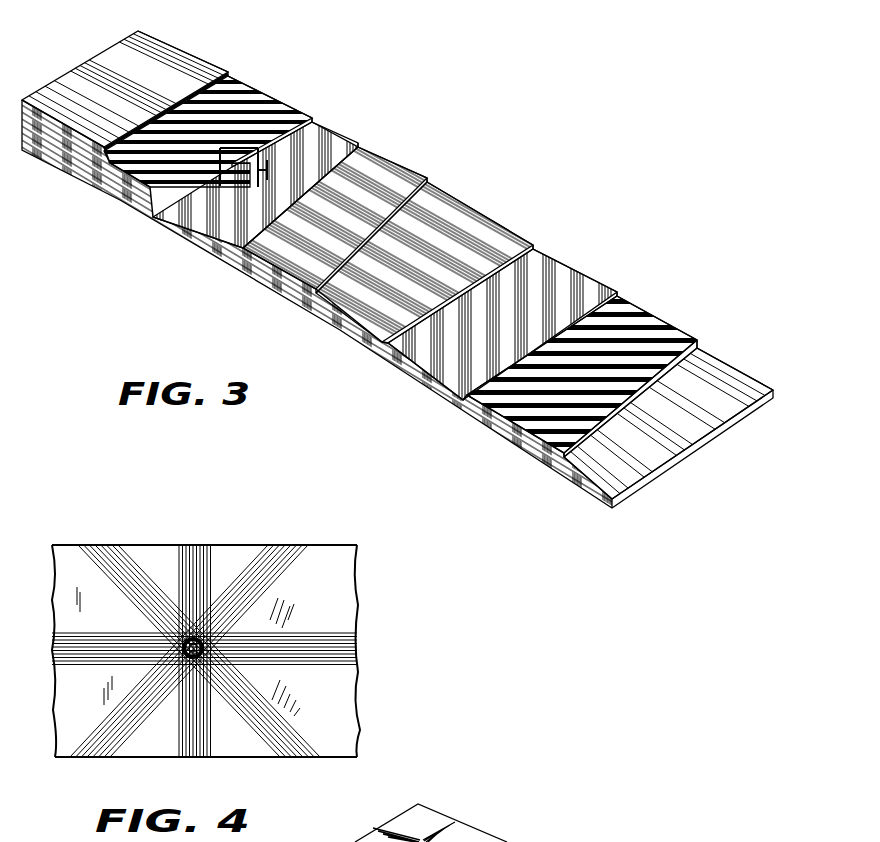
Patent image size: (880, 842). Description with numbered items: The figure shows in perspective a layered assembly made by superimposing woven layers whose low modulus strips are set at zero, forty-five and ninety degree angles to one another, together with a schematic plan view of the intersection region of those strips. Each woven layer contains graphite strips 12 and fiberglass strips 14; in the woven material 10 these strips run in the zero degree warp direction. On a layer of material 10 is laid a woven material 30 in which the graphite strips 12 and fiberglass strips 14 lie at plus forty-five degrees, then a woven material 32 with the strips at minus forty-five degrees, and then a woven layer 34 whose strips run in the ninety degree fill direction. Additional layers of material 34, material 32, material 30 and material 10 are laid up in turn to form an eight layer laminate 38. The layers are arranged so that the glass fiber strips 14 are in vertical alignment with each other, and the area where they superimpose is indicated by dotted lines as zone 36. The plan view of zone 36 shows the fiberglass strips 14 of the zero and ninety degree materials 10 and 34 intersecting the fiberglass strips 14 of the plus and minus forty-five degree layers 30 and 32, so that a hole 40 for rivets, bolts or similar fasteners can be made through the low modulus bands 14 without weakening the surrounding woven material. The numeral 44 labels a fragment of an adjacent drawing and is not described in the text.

In FIG. 3, the woven material 10 is at (112, 45).
In FIG. 3, the graphite strips 12 is at (160, 50).
In FIG. 3, the fiberglass strips 14 is at (170, 62).
In FIG. 4, the fiberglass strips 14 is at (105, 552).
In FIG. 3, the woven material 30 is at (274, 84).
In FIG. 3, the woven material 32 is at (362, 128).
In FIG. 3, the woven layer 34 is at (433, 168).
In FIG. 3, the zone 36 is at (213, 186).
In FIG. 4, the zone 36 is at (372, 582).
In FIG. 3, the eight layer laminate 38 is at (478, 92).
In FIG. 4, the hole 40 is at (182, 646).
In FIG. 4, the adjacent figure element 44 is at (620, 841).